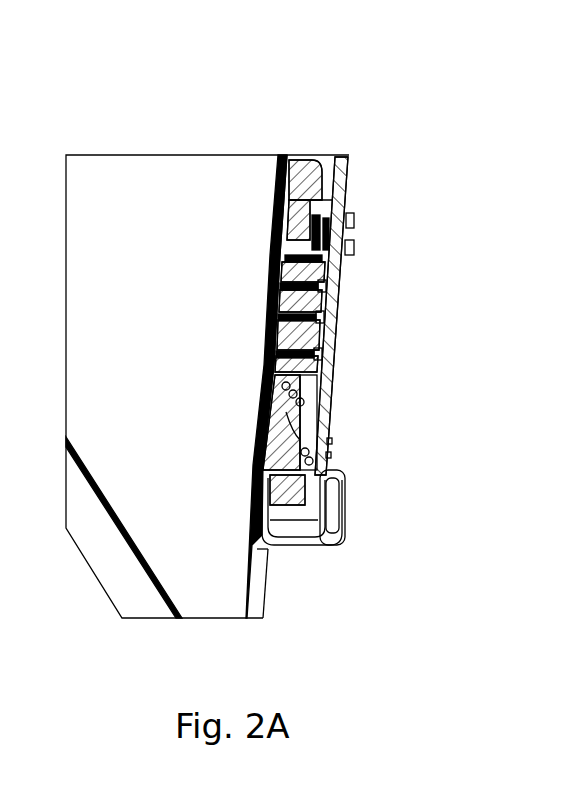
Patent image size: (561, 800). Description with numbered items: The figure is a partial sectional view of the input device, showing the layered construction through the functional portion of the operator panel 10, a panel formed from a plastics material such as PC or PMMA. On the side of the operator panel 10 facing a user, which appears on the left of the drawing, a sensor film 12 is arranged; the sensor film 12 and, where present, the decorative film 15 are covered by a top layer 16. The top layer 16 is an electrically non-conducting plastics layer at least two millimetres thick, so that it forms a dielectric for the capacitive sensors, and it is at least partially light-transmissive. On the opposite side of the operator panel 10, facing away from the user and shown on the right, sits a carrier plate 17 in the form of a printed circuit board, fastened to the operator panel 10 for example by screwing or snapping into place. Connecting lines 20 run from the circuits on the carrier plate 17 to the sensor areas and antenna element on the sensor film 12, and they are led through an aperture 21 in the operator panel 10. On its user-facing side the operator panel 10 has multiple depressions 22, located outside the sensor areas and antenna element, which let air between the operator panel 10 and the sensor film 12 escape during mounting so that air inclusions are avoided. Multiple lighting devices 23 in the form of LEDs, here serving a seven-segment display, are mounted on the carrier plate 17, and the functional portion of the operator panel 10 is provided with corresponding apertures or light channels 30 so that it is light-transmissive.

The operator panel 10 is at (115, 575).
The sensor film 12 is at (282, 168).
The decorative film 15 is at (275, 310).
The top layer 16 is at (144, 175).
The carrier plate 17 is at (347, 177).
The connecting lines 20 is at (333, 539).
The aperture 21 is at (272, 527).
The depressions 22 is at (318, 204).
The lighting devices 23 is at (312, 348).
The apertures/light channels 30 is at (310, 340).